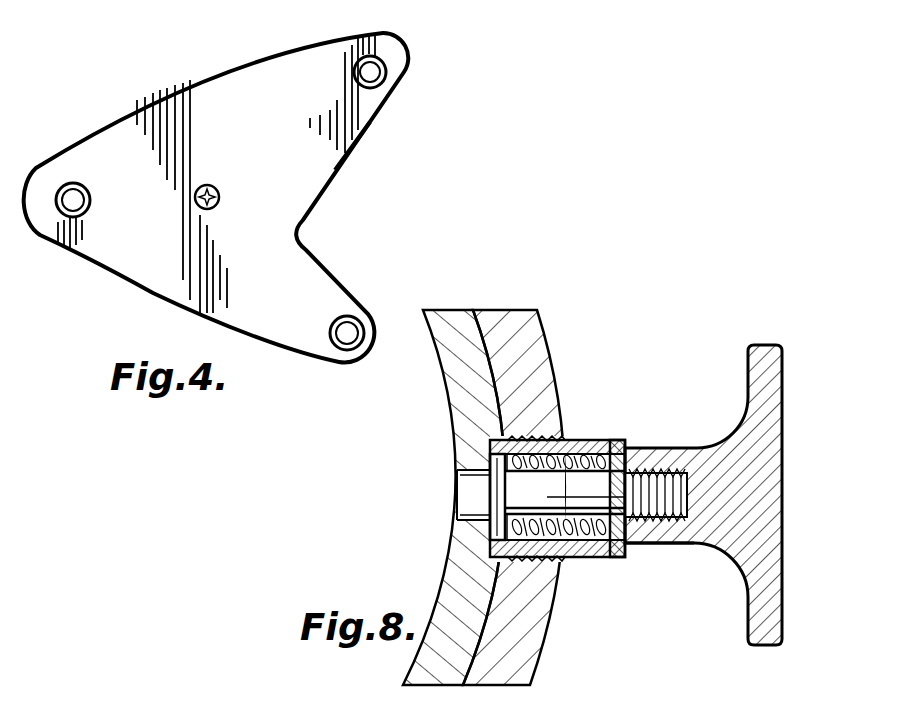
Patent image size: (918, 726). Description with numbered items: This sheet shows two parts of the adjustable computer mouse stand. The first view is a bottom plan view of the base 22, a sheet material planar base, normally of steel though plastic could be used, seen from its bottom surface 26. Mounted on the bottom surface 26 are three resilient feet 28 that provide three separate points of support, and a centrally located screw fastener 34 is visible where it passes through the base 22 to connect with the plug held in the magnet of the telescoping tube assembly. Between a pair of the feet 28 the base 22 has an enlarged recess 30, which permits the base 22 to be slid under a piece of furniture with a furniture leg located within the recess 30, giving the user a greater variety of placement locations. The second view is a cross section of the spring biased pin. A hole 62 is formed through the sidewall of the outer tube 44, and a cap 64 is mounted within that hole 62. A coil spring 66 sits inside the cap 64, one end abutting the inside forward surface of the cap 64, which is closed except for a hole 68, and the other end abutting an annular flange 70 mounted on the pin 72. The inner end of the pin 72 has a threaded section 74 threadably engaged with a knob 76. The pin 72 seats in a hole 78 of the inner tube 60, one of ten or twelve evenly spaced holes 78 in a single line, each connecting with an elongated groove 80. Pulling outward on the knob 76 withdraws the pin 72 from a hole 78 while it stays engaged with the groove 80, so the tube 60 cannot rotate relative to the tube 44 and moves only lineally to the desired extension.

In FIG. 4, the base 22 is at (196, 76).
In FIG. 4, the bottom surface 26 is at (300, 63).
In FIG. 4, the resilient feet 28 is at (66, 183).
In FIG. 4, the recess 30 is at (341, 161).
In FIG. 4, the screw fastener 34 is at (221, 200).
In FIG. 8, the tube 44 is at (520, 310).
In FIG. 8, the tube 60 is at (445, 310).
In FIG. 8, the hole 62 is at (575, 440).
In FIG. 8, the cap 64 is at (615, 440).
In FIG. 8, the coil spring 66 is at (607, 558).
In FIG. 8, the hole 68 is at (640, 546).
In FIG. 8, the annular flange 70 is at (490, 452).
In FIG. 8, the pin 72 is at (460, 495).
In FIG. 8, the threaded section 74 is at (660, 460).
In FIG. 8, the knob 76 is at (760, 345).
In FIG. 8, the holes 78 is at (460, 522).
In FIG. 8, the elongated groove 80 is at (458, 470).